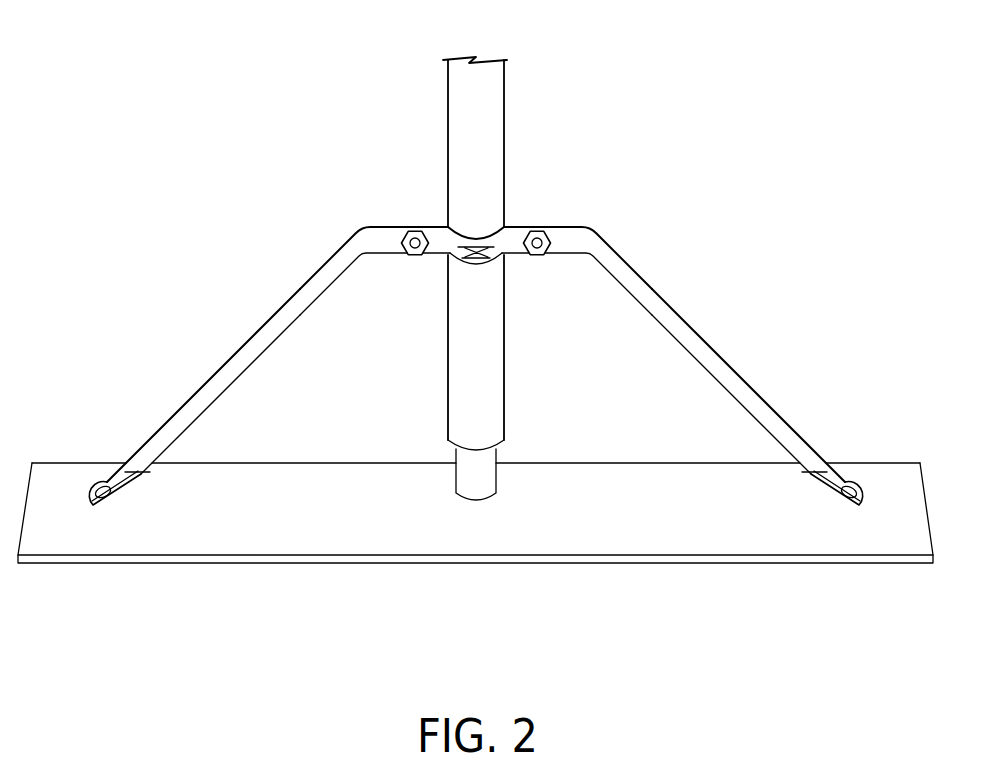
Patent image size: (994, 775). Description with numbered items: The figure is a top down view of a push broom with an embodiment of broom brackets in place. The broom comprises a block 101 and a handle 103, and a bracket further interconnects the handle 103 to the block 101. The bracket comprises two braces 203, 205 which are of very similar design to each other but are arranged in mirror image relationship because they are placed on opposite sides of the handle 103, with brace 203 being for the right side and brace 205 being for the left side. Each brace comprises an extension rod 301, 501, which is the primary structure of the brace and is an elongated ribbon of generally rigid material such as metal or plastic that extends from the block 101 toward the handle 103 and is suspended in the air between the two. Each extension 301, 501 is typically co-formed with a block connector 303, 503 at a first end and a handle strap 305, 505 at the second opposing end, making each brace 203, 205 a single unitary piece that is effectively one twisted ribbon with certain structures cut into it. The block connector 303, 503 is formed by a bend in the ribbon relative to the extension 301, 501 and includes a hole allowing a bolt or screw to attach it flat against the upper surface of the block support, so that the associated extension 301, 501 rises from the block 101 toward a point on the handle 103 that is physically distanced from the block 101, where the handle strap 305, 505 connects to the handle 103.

The block 101 is at (305, 526).
The handle 103 is at (491, 126).
The brace 203 is at (285, 332).
The brace 205 is at (694, 332).
The extension rod 301 is at (215, 372).
The block connector 303 is at (115, 483).
The handle strap 305 is at (388, 223).
The extension rod 501 is at (737, 378).
The block connector 503 is at (835, 485).
The handle strap 505 is at (577, 228).